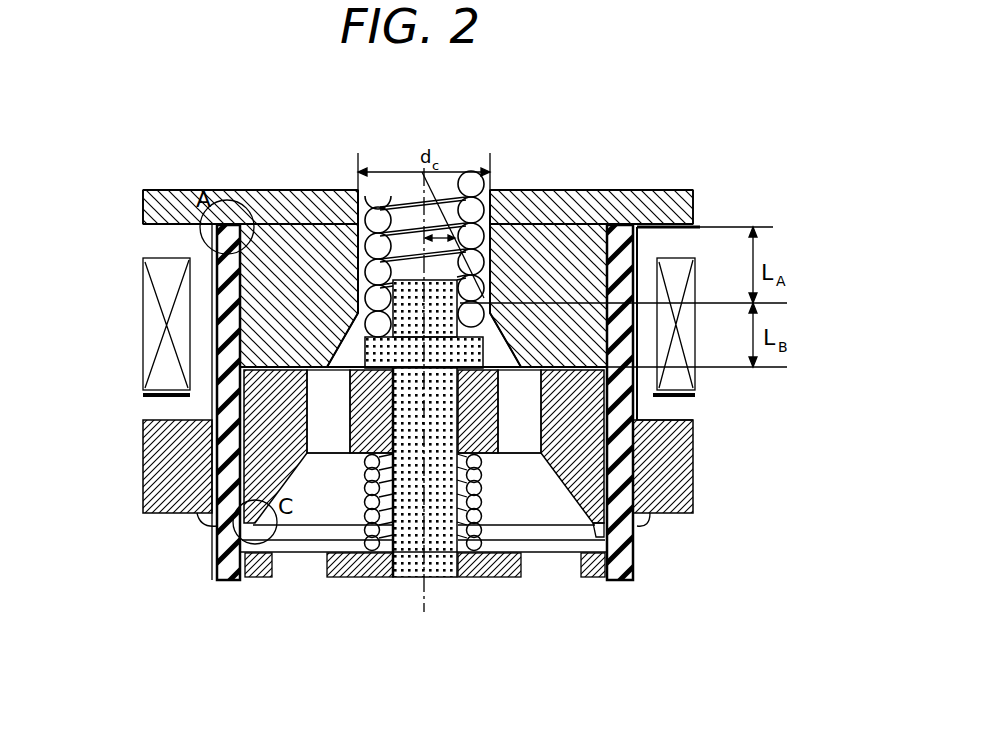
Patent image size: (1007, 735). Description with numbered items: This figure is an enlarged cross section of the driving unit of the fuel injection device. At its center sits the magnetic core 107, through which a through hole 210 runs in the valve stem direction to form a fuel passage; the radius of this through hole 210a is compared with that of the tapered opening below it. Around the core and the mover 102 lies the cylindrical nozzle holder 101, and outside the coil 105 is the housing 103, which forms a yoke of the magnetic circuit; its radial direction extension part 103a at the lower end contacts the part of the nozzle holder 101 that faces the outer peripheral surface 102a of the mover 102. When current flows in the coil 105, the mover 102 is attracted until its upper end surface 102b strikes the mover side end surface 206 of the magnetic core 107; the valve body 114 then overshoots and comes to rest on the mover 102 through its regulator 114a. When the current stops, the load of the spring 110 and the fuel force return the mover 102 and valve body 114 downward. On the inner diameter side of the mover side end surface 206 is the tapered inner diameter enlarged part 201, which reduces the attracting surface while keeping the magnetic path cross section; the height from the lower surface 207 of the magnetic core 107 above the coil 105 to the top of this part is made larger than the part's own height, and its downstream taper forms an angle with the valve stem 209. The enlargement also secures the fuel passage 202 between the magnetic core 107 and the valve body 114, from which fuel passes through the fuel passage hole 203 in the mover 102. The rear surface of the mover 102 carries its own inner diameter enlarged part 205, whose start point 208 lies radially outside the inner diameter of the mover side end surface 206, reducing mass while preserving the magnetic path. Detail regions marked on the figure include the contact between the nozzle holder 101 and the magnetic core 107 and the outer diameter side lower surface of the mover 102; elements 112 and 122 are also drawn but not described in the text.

The nozzle holder 101 is at (222, 552).
The mover 102 is at (300, 428).
The outer peripheral surface of the mover 102a is at (240, 453).
The upper end surface of the mover 102b is at (286, 366).
The housing 103 is at (175, 500).
The radial direction extension part 103a is at (690, 467).
The coil 105 is at (165, 383).
The magnetic core 107 is at (254, 200).
The spring 110 is at (497, 205).
The return spring 112 is at (472, 530).
The valve body 114 is at (403, 577).
The regulator 114a is at (483, 345).
The housing wall 122 is at (170, 243).
The inner diameter enlarged part 201 is at (350, 322).
The fuel passage 202 is at (640, 257).
The fuel passage hole 203 is at (522, 400).
The inner diameter enlarged part of the mover 205 is at (628, 530).
The mover side end surface 206 is at (272, 350).
The lower surface of the magnetic core 207 is at (165, 223).
The start point 208 is at (552, 453).
The valve stem 209 is at (422, 176).
The through hole 210 is at (358, 188).
The through hole 210a is at (488, 190).